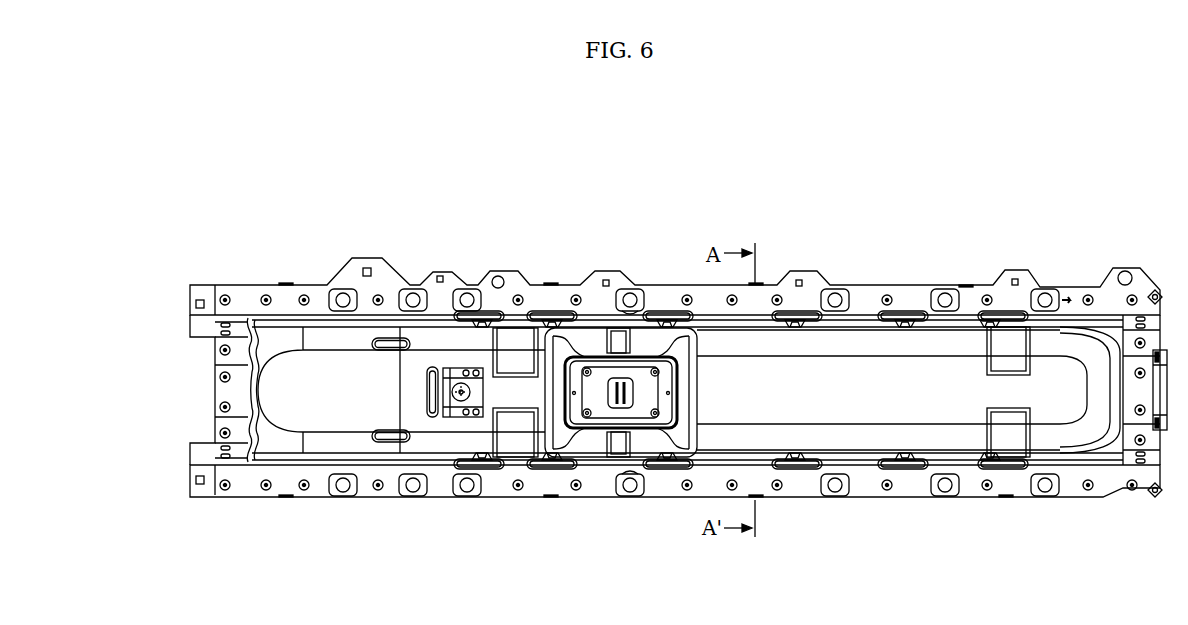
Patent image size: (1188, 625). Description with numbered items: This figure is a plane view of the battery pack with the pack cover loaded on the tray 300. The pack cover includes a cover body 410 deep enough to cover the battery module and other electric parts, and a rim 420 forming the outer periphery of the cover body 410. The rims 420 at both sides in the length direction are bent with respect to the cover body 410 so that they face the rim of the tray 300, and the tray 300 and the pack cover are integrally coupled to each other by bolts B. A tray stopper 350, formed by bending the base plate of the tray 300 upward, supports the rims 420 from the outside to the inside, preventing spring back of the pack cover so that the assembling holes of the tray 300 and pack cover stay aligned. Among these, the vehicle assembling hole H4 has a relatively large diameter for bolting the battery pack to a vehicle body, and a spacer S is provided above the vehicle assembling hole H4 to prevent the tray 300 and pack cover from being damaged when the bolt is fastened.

The tray 300 is at (198, 503).
The tray stopper 350 is at (286, 283).
The cover body 410 is at (918, 343).
The rim of the pack cover 420 is at (900, 292).
The bolt B is at (517, 294).
The vehicle assembling hole H4 is at (628, 298).
The spacer S is at (636, 293).